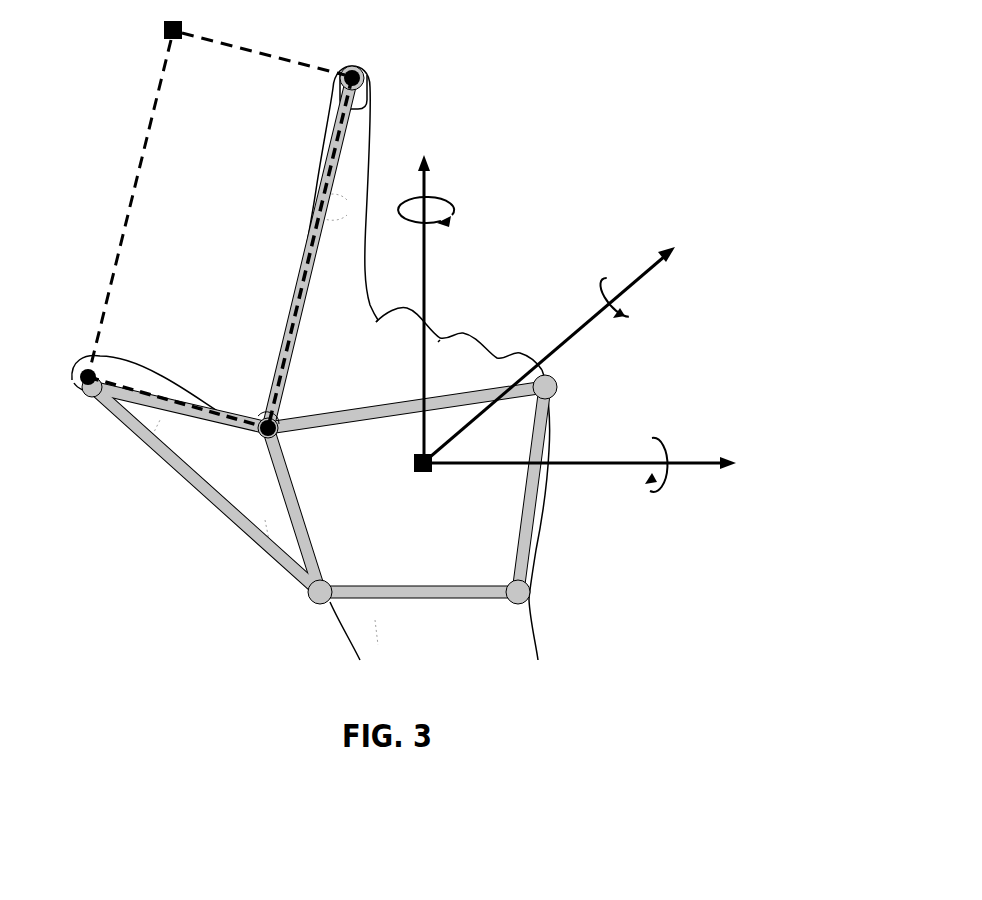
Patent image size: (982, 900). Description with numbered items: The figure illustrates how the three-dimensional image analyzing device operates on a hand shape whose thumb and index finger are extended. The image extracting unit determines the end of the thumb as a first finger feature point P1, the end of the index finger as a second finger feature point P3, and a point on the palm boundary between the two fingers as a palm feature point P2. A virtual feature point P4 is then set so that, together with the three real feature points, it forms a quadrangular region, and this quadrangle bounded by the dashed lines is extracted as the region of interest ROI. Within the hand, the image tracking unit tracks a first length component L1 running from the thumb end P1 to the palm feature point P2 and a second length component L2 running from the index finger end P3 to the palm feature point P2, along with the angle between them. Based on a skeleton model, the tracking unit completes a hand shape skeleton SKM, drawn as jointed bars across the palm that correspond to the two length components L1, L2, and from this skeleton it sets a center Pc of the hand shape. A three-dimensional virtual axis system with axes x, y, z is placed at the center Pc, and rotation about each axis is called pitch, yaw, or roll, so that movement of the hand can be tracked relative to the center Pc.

The first finger feature point P1 is at (70, 382).
The palm feature point P2 is at (257, 446).
The second finger feature point P3 is at (351, 64).
The virtual feature point P4 is at (157, 23).
The center of the hand shape Pc is at (421, 481).
The first length component L1 is at (178, 410).
The second length component L2 is at (309, 253).
The region of interest ROI is at (133, 188).
The hand shape skeleton SKM is at (535, 503).
The x axis x is at (588, 462).
The y axis y is at (424, 289).
The z axis z is at (557, 340).
The element yaw is at (448, 209).
The element roll is at (620, 315).
The element pitch is at (656, 480).